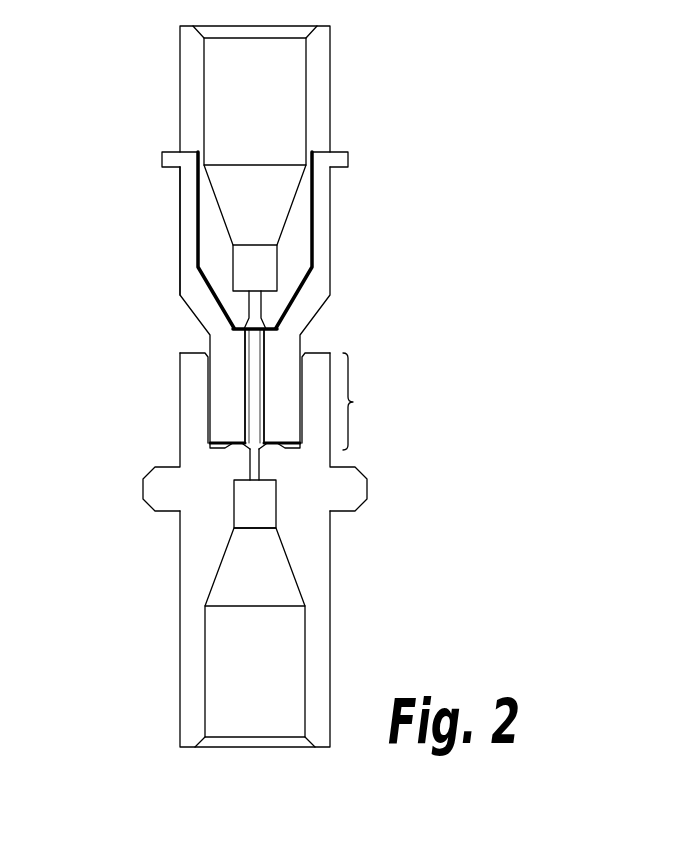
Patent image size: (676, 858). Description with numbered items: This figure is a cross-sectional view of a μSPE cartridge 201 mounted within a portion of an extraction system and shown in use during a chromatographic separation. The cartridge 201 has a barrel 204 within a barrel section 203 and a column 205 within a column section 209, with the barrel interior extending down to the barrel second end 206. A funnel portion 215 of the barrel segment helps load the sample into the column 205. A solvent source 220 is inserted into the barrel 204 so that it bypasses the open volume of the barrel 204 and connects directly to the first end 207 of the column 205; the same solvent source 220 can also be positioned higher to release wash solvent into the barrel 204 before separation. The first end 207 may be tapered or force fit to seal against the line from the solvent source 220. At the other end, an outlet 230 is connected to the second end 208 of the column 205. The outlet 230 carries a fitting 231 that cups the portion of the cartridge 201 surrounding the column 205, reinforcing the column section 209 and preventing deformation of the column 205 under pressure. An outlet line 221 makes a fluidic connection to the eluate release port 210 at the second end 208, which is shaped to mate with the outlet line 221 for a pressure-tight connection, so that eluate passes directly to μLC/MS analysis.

The solvent source 220 is at (330, 83).
The cartridge 201 is at (322, 212).
The barrel section 203 is at (180, 205).
The barrel 204 is at (288, 270).
The funnel portion 215 is at (203, 275).
The barrel second end 206 is at (235, 315).
The first end of column 207 is at (262, 315).
The column 205 is at (265, 347).
The column section 209 is at (230, 378).
The fitting 231 is at (372, 401).
The eluate release port 210 is at (240, 442).
The second end of column 208 is at (301, 444).
The outlet line 221 is at (248, 446).
The outlet 230 is at (331, 578).